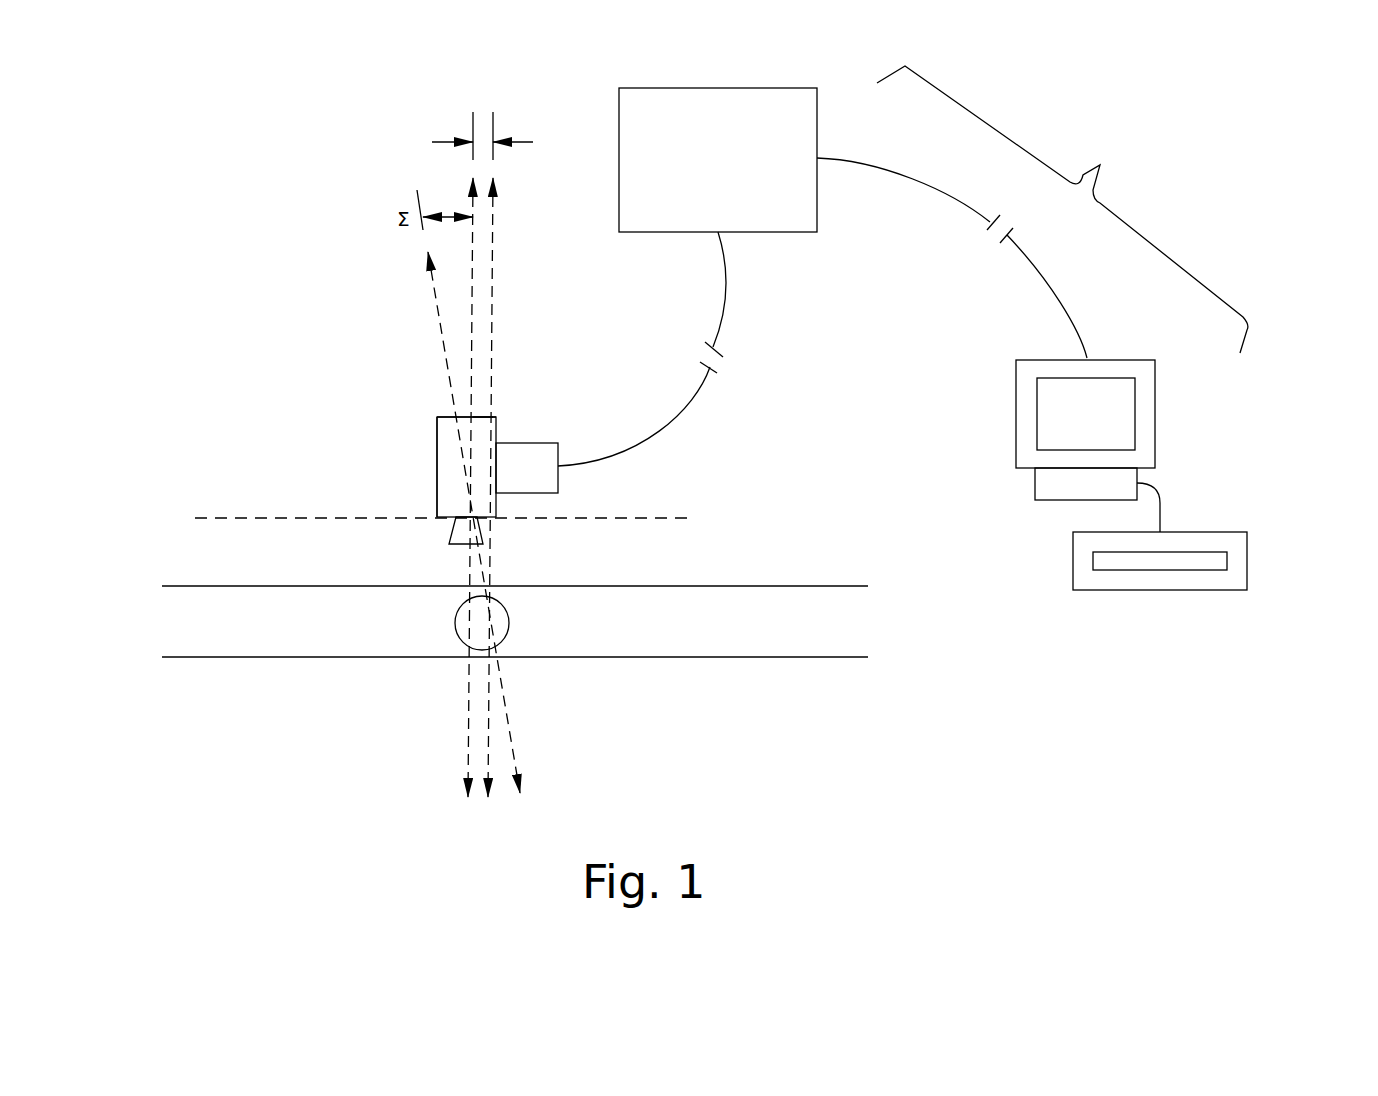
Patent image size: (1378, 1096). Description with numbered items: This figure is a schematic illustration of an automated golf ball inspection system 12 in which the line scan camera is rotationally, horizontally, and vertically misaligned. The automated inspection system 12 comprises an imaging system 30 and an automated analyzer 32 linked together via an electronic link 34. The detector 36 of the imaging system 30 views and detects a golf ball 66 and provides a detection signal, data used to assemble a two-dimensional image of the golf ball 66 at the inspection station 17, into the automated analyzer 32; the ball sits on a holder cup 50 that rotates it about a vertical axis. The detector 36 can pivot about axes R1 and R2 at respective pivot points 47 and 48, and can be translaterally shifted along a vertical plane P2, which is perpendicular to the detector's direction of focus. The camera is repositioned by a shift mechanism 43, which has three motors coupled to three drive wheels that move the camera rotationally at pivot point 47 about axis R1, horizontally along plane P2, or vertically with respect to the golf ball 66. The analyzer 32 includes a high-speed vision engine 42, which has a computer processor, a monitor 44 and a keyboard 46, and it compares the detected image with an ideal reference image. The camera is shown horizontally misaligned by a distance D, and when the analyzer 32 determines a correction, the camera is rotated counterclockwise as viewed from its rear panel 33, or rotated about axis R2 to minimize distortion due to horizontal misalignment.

The automated inspection system 12 is at (828, 710).
The inspection station 17 is at (693, 553).
The imaging system 30 is at (515, 420).
The automated analyzer 32 is at (1032, 212).
The rear panel 33 is at (438, 413).
The electronic link 34 is at (683, 403).
The detector 36 is at (443, 428).
The high-speed vision engine 42 is at (735, 174).
The shift mechanism 43 is at (527, 468).
The monitor 44 is at (1155, 412).
The keyboard 46 is at (1247, 558).
The pivot point 47 is at (475, 405).
The pivot point 48 is at (455, 470).
The cup 50 is at (518, 635).
The golf ball 66 is at (503, 612).
The axis of rotation R1 is at (470, 203).
The axis of rotation R2 is at (462, 452).
The distance D is at (495, 136).
The vertical plane P2 is at (225, 513).